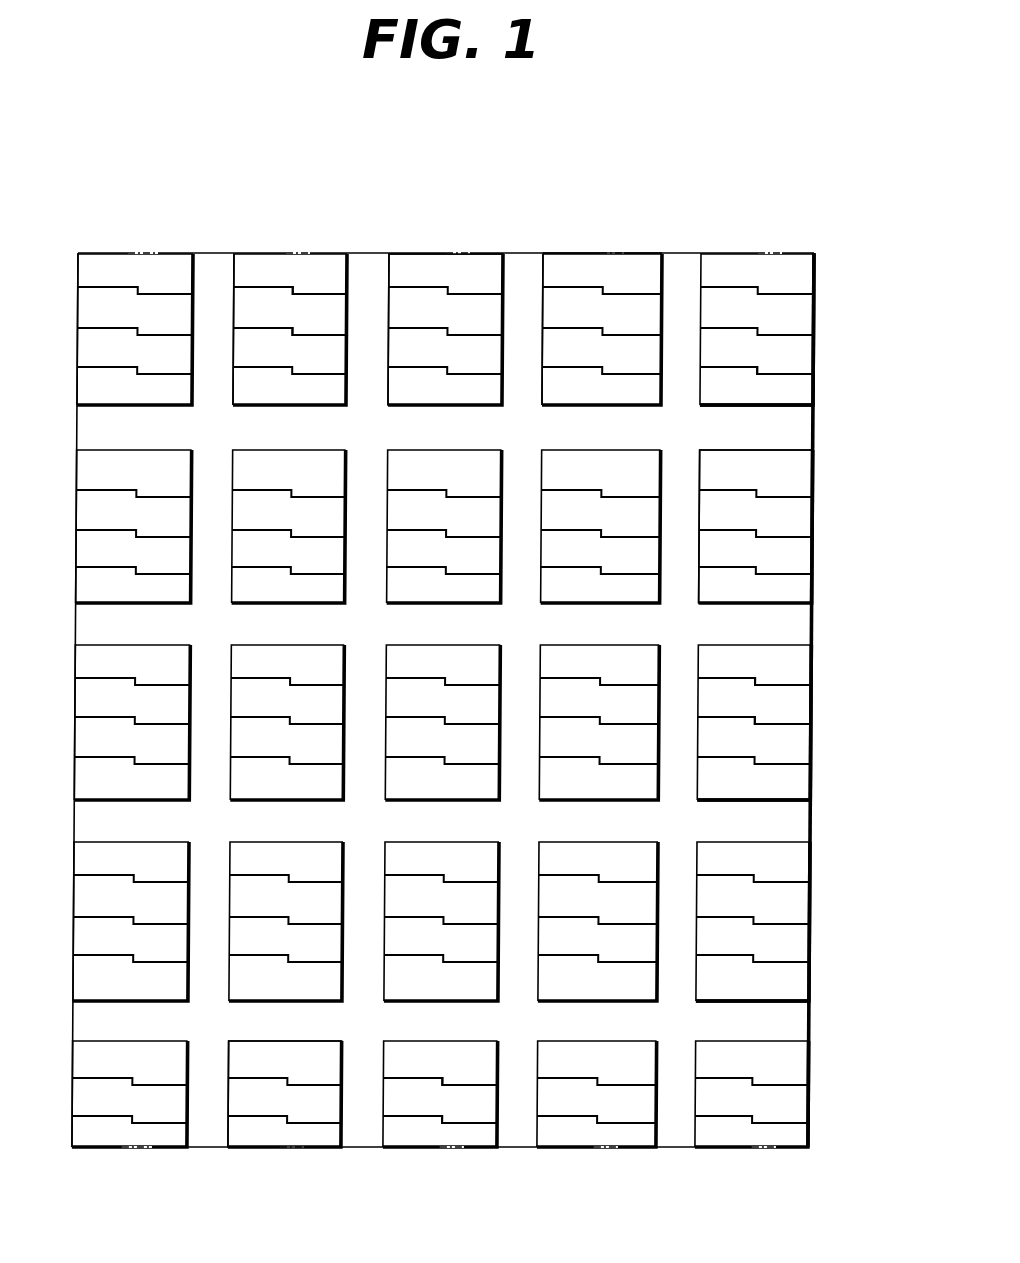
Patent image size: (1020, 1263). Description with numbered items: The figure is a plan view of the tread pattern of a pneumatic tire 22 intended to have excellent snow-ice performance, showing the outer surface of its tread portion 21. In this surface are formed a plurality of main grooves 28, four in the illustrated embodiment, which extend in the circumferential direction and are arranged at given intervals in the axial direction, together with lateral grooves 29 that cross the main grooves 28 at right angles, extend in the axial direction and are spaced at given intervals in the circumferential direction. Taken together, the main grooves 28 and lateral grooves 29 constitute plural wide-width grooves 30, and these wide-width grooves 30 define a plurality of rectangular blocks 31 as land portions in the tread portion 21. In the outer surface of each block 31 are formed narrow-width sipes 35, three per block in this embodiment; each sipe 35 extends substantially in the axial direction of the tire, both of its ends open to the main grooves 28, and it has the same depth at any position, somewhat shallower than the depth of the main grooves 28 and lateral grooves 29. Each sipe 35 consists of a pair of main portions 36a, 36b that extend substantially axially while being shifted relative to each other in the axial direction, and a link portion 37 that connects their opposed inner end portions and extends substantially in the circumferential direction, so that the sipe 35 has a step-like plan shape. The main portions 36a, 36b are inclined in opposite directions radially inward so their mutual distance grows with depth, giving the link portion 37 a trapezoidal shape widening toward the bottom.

The tread portion 21 is at (633, 254).
The pneumatic tire 22 is at (584, 213).
The main groove 28 is at (212, 270).
The lateral groove 29 is at (785, 428).
The wide-width groove 30 is at (764, 1023).
The block 31 is at (413, 303).
The sipe 35 is at (266, 326).
The main portion 36a is at (736, 288).
The main portion 36b is at (792, 294).
The link portion 37 is at (760, 370).